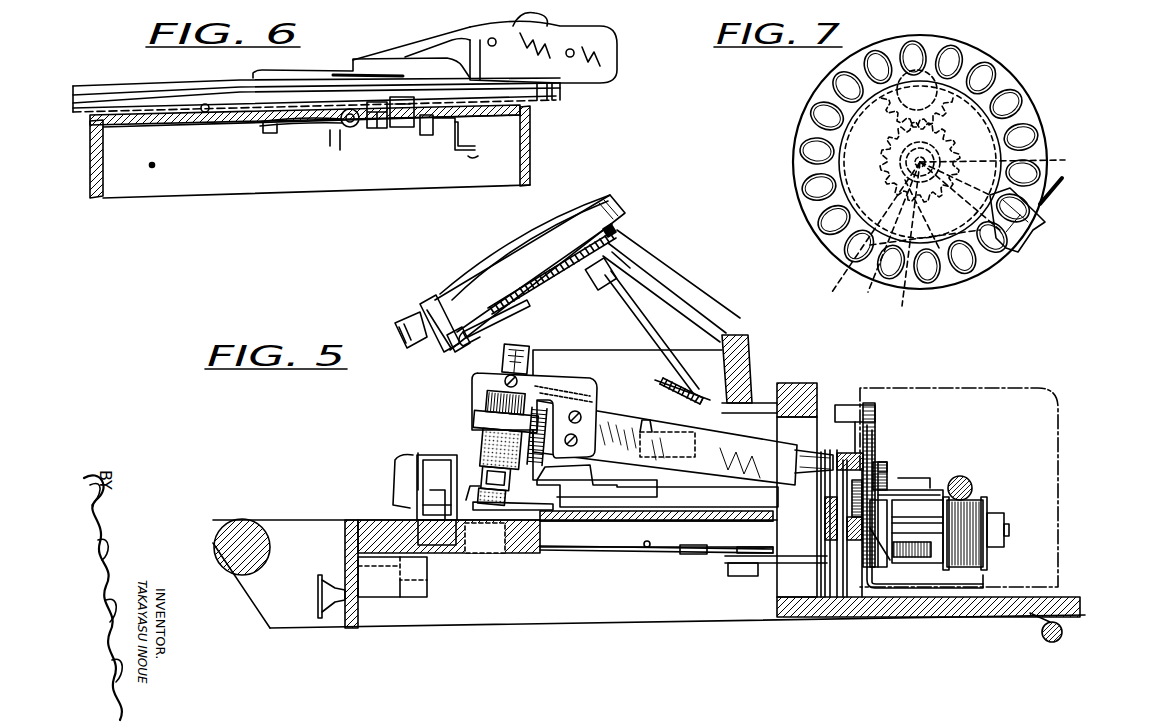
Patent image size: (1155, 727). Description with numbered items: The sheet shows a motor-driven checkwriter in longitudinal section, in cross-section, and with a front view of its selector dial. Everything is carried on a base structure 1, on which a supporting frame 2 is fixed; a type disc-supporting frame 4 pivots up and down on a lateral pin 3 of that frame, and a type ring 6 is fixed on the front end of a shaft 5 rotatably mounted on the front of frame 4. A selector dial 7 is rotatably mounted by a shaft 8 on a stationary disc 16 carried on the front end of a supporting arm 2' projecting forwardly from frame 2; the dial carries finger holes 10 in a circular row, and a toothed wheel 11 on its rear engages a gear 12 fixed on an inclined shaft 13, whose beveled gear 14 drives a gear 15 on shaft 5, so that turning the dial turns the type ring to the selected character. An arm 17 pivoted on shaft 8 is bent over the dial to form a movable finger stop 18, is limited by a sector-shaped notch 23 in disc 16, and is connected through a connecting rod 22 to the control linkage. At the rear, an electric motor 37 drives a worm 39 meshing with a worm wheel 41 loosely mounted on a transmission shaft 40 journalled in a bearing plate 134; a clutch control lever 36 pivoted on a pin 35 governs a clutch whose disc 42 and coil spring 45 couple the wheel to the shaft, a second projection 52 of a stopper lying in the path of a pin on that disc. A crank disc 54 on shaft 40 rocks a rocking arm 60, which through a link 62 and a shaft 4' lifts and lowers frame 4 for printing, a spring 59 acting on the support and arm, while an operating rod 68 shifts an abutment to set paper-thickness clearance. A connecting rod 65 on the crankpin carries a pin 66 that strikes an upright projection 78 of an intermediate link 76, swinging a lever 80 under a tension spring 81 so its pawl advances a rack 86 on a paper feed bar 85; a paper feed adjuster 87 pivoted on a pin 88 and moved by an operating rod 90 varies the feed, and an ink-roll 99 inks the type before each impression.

In FIG. 6, the base structure 1 is at (530, 142).
In FIG. 5, the base structure 1 is at (358, 520).
In FIG. 5, the supporting frame 2 is at (806, 476).
In FIG. 5, the supporting arm 2' is at (671, 284).
In FIG. 5, the lateral pin 3 is at (655, 480).
In FIG. 5, the type disc-supporting frame 4 is at (657, 563).
In FIG. 5, the shaft 4' is at (830, 474).
In FIG. 5, the shaft 5 is at (470, 410).
In FIG. 5, the type ring 6 is at (497, 357).
In FIG. 7, the selector dial 7 is at (965, 52).
In FIG. 5, the selector dial 7 is at (398, 342).
In FIG. 7, the shaft 8 is at (835, 289).
In FIG. 7, the finger holes 10 is at (1000, 102).
In FIG. 7, the toothed wheel 11 is at (869, 296).
In FIG. 5, the toothed wheel 11 is at (545, 278).
In FIG. 7, the gear 12 is at (933, 48).
In FIG. 5, the gear 12 is at (620, 250).
In FIG. 5, the inclined shaft 13 is at (630, 318).
In FIG. 5, the beveled gear 14 is at (690, 372).
In FIG. 5, the gear 15 is at (640, 470).
In FIG. 7, the stationary disc 16 is at (860, 163).
In FIG. 7, the arm 17 is at (1048, 168).
In FIG. 5, the arm 17 is at (448, 346).
In FIG. 7, the movable finger stop 18 is at (1018, 238).
In FIG. 5, the movable finger stop 18 is at (422, 306).
In FIG. 7, the connecting rod 22 is at (1066, 192).
In FIG. 5, the connecting rod 22 is at (515, 303).
In FIG. 7, the sector-shaped notch 23 is at (914, 309).
In FIG. 5, the pin 35 is at (873, 402).
In FIG. 5, the clutch control lever 36 is at (850, 403).
In FIG. 5, the electric motor 37 is at (1060, 520).
In FIG. 5, the worm 39 is at (974, 486).
In FIG. 5, the transmission shaft 40 is at (1003, 548).
In FIG. 5, the worm wheel 41 is at (963, 570).
In FIG. 5, the clutch disc 42 is at (935, 498).
In FIG. 5, the coil spring 45 is at (900, 555).
In FIG. 5, the second projection 52 is at (912, 498).
In FIG. 5, the crank disc 54 is at (838, 600).
In FIG. 5, the spring 59 is at (985, 487).
In FIG. 5, the rocking arm 60 is at (862, 600).
In FIG. 5, the link 62 is at (868, 585).
In FIG. 5, the connecting rod 65 is at (818, 600).
In FIG. 5, the pin 66 is at (775, 565).
In FIG. 6, the operating rod 68 is at (155, 170).
In FIG. 5, the intermediate link 76 is at (700, 555).
In FIG. 5, the upright projection 78 is at (745, 577).
In FIG. 5, the lever 80 is at (575, 530).
In FIG. 5, the tension spring 81 is at (640, 556).
In FIG. 6, the paper feed bar 85 is at (172, 86).
In FIG. 6, the rack 86 is at (205, 112).
In FIG. 5, the rack 86 is at (428, 575).
In FIG. 6, the paper feed adjuster 87 is at (413, 128).
In FIG. 6, the pin 88 is at (395, 128).
In FIG. 5, the operating rod 90 is at (382, 598).
In FIG. 5, the ink-roll 99 is at (492, 550).
In FIG. 5, the bearing plate 134 is at (945, 598).